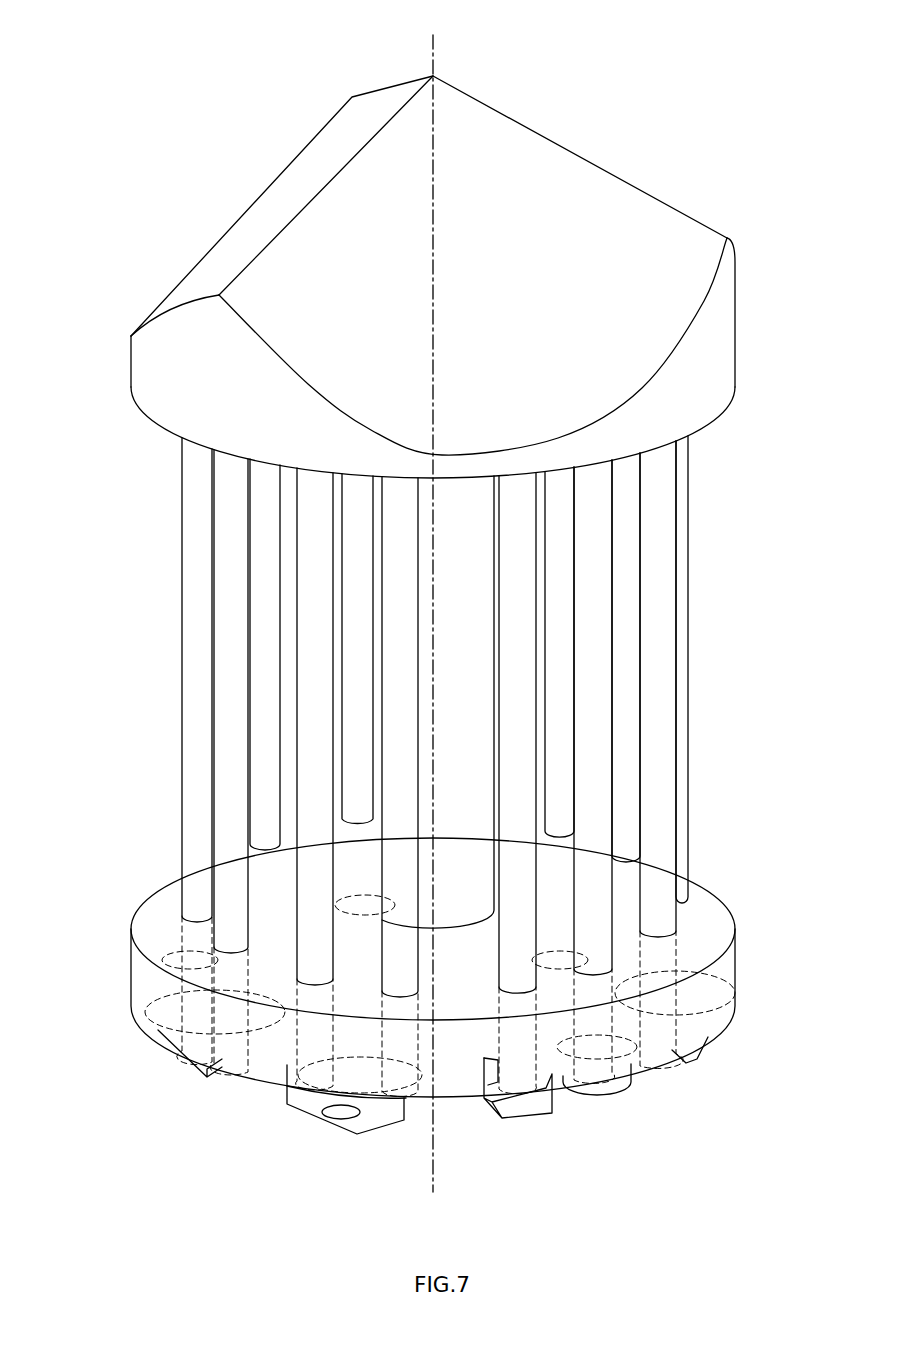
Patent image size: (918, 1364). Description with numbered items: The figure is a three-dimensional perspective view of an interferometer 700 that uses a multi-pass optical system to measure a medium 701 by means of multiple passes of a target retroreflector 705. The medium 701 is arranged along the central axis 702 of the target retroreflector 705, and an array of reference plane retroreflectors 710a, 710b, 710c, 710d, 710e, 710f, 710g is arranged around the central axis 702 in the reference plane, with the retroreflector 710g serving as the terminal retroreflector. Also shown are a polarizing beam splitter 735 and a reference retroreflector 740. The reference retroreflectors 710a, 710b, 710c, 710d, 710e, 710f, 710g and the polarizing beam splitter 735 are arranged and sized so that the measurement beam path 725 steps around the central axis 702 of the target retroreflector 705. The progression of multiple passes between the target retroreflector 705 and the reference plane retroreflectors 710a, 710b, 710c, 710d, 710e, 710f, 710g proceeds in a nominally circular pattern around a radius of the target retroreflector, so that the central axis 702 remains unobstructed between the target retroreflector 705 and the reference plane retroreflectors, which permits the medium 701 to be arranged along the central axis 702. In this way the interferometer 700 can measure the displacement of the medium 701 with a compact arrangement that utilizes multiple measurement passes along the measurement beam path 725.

The interferometer 700 is at (191, 87).
The central axis 702 is at (433, 72).
The target retroreflector 705 is at (737, 296).
The medium 701 is at (458, 482).
The measurement beam path 725 is at (116, 432).
The retroreflector 710a is at (707, 1040).
The retroreflector 710b is at (547, 927).
The retroreflector 710c is at (363, 926).
The retroreflector 710d is at (176, 950).
The retroreflector 710e is at (182, 1050).
The retroreflector 710f is at (378, 1128).
The terminal retroreflector 710g is at (610, 1092).
The polarizing beam splitter 735 is at (488, 1076).
The reference retroreflector 740 is at (530, 1120).